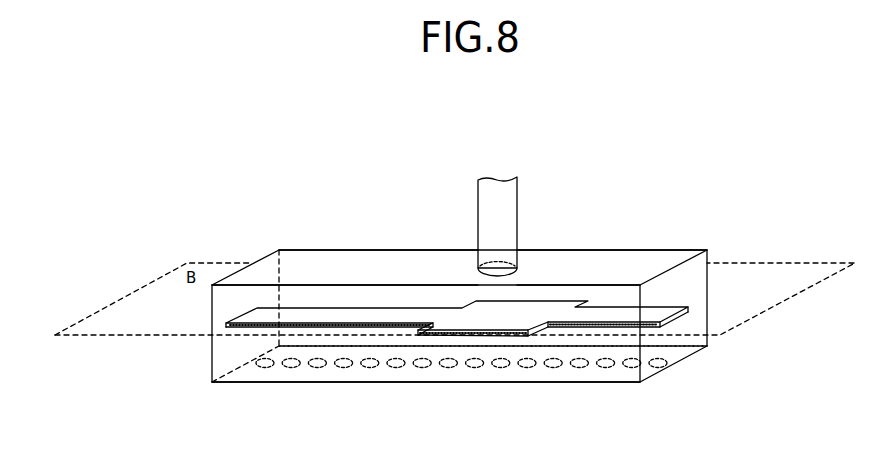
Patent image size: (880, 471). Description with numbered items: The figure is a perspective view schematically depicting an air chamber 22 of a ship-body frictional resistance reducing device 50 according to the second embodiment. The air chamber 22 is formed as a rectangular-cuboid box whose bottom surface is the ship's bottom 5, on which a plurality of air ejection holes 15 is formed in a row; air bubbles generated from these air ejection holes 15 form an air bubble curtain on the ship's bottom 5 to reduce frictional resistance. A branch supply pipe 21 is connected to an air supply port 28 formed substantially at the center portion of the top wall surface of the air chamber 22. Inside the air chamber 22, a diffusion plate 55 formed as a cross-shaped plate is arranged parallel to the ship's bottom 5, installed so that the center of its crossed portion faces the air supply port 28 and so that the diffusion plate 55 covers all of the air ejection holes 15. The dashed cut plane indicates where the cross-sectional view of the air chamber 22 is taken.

The ship-body frictional resistance reducing device 50 is at (607, 162).
The branch supply pipe 21 is at (518, 191).
The air chamber 22 is at (692, 249).
The air supply port 28 is at (518, 273).
The ship's bottom 5 is at (505, 384).
The air ejection holes 15 is at (263, 368).
The diffusion plate 55 is at (680, 317).